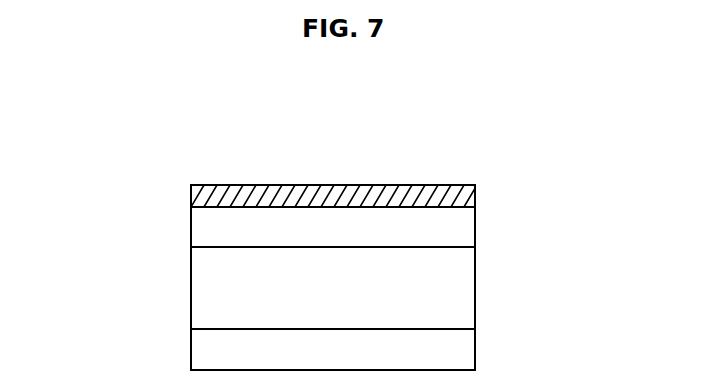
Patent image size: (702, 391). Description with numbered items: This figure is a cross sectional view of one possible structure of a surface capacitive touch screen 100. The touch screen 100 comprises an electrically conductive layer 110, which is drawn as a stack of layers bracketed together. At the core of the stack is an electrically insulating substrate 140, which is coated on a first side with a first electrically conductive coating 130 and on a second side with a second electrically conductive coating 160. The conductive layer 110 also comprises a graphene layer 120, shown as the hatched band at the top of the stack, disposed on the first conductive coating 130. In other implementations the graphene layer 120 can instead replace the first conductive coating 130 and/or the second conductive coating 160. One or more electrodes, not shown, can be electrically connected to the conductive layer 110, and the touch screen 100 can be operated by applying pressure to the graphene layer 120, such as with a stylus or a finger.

The touch screen 100 is at (156, 140).
The electrically conductive layer 110 is at (183, 186).
The graphene layer 120 is at (475, 199).
The first electrically conductive coating 130 is at (475, 229).
The electrically insulating substrate 140 is at (475, 291).
The second electrically conductive coating 160 is at (475, 351).